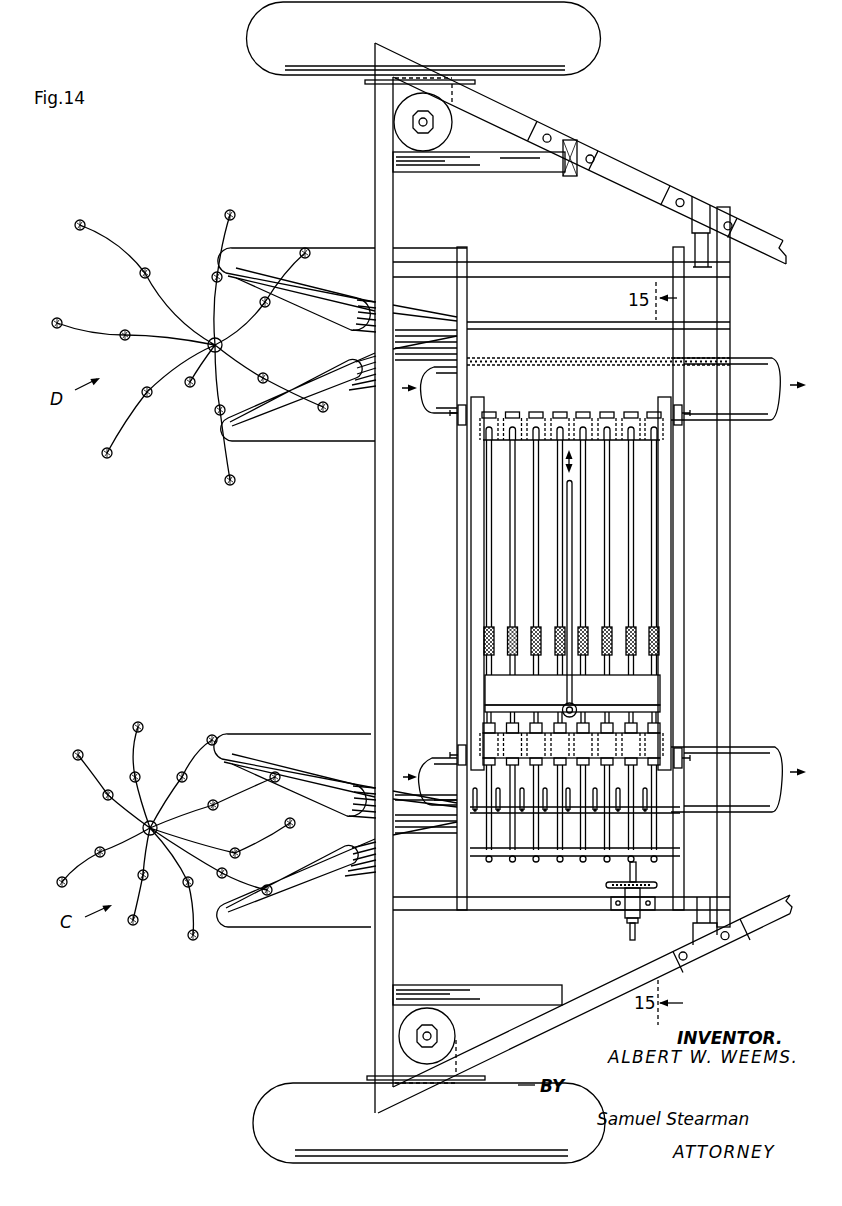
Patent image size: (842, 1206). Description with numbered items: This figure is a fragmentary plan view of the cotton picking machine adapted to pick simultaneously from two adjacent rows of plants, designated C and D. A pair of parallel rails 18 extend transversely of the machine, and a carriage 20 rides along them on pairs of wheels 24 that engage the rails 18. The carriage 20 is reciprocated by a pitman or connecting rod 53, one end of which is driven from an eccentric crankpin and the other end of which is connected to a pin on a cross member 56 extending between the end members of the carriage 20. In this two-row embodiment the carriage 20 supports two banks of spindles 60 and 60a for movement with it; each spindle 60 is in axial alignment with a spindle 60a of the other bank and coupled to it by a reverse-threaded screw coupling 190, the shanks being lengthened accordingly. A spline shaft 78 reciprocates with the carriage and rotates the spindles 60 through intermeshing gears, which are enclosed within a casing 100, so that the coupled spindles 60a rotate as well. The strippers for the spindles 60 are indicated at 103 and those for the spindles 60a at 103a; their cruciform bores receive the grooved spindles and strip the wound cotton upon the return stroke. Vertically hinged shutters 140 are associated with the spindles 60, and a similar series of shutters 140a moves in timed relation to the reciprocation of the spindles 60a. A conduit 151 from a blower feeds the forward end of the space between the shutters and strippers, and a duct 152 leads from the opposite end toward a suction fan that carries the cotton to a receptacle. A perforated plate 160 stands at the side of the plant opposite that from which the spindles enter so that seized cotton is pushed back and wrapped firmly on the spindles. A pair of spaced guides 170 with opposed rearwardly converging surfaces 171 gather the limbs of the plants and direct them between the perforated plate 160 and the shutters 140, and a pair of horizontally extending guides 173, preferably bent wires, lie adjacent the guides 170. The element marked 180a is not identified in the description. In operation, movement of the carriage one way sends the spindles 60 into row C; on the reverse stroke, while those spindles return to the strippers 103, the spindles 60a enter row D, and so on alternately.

The rails 18 is at (682, 588).
The carriage 20 is at (477, 485).
The wheels 24 is at (457, 418).
The pitman or connecting rod 53 is at (572, 517).
The cross member 56 is at (653, 709).
The spindles 60 is at (640, 678).
The spindles 60a is at (633, 550).
The spline shaft 78 is at (637, 870).
The casing 100 is at (510, 686).
The strippers 103 is at (648, 742).
The strippers 103a is at (603, 425).
The shutters 140 is at (595, 790).
The shutters 140a is at (597, 362).
The conduit 151 is at (452, 792).
The duct 152 is at (768, 783).
The perforated plate 160 is at (593, 855).
The guides 170 is at (298, 743).
The rearwardly converging surfaces 171 is at (330, 783).
The horizontally extending guides 173 is at (373, 818).
The upper cross bar 180a is at (582, 310).
The reverse-threaded screw coupling 190 is at (637, 640).